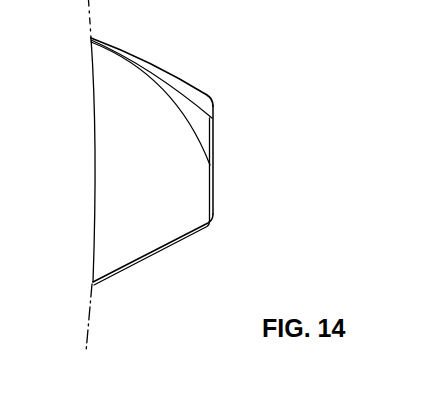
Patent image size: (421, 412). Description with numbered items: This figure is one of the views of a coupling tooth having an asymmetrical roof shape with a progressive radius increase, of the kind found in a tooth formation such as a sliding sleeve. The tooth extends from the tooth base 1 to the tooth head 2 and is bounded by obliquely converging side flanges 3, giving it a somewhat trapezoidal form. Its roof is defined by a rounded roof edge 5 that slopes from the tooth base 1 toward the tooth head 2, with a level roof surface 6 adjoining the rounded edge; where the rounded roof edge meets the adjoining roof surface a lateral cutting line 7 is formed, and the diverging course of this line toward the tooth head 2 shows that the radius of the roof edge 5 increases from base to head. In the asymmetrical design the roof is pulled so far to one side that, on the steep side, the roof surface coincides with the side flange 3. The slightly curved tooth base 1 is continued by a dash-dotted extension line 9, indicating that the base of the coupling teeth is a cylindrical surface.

The tooth base 1 is at (122, 97).
The tooth head 2 is at (213, 164).
The side flange 3 is at (127, 52).
The roof edge 5 is at (162, 73).
The roof surface 6 is at (162, 190).
The lateral cutting line 7 is at (180, 104).
The dash-dotted extension line 9 is at (88, 330).